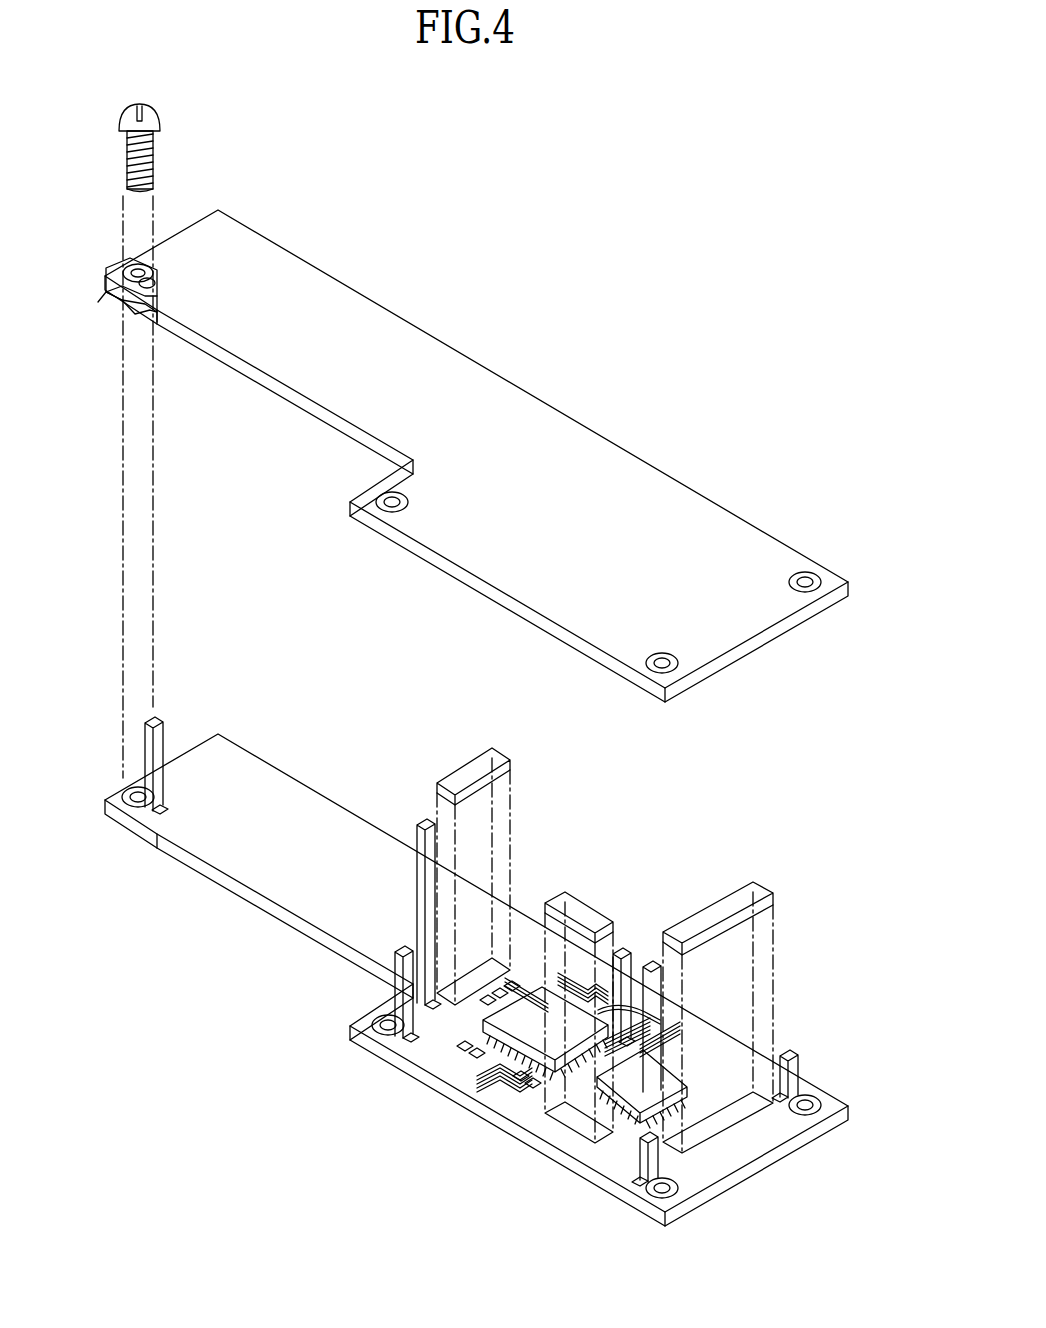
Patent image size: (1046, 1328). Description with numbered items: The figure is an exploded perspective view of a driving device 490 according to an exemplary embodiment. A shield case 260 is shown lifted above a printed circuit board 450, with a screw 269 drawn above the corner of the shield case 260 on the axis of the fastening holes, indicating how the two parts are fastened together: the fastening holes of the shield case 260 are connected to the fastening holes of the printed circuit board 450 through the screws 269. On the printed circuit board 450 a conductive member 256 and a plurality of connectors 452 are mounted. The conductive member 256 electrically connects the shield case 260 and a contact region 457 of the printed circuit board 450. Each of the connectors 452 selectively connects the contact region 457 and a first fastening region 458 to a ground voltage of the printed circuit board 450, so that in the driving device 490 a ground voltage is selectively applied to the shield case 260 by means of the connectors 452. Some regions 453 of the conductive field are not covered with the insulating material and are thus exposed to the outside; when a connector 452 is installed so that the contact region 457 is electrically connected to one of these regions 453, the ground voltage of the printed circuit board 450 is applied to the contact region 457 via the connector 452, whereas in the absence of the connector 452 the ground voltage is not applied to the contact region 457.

The driving device 490 is at (700, 258).
The screw 269 is at (160, 112).
The shield case 260 is at (665, 485).
The printed circuit board 450 is at (728, 1162).
The connector 452 is at (400, 948).
The region 453 is at (640, 1174).
The conductive member 256 is at (592, 910).
The contact region 457 is at (565, 1124).
The first fastening region 458 is at (374, 1020).